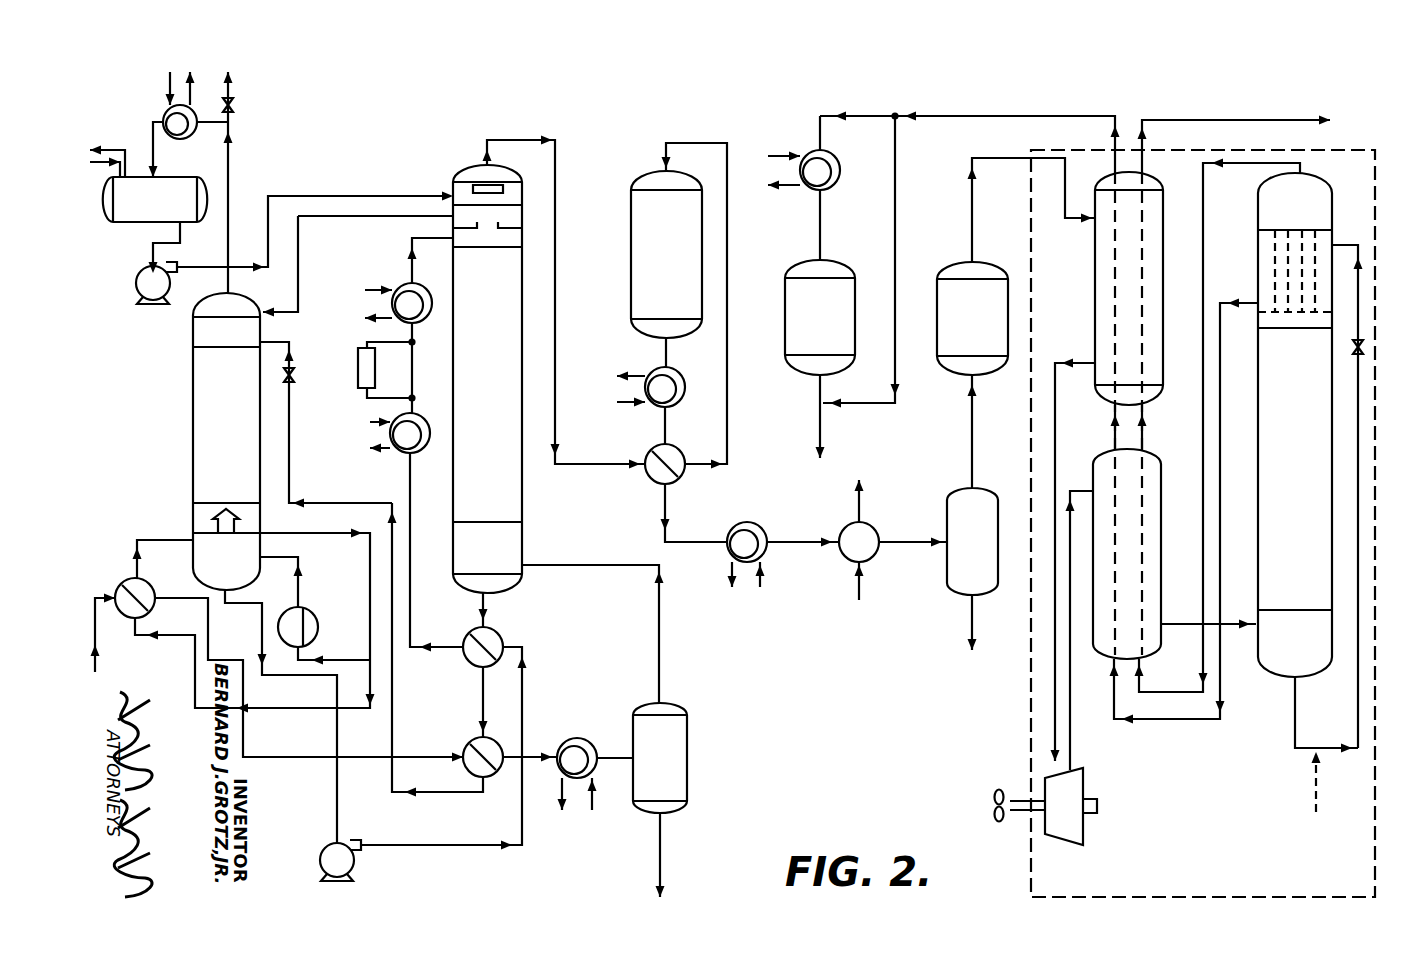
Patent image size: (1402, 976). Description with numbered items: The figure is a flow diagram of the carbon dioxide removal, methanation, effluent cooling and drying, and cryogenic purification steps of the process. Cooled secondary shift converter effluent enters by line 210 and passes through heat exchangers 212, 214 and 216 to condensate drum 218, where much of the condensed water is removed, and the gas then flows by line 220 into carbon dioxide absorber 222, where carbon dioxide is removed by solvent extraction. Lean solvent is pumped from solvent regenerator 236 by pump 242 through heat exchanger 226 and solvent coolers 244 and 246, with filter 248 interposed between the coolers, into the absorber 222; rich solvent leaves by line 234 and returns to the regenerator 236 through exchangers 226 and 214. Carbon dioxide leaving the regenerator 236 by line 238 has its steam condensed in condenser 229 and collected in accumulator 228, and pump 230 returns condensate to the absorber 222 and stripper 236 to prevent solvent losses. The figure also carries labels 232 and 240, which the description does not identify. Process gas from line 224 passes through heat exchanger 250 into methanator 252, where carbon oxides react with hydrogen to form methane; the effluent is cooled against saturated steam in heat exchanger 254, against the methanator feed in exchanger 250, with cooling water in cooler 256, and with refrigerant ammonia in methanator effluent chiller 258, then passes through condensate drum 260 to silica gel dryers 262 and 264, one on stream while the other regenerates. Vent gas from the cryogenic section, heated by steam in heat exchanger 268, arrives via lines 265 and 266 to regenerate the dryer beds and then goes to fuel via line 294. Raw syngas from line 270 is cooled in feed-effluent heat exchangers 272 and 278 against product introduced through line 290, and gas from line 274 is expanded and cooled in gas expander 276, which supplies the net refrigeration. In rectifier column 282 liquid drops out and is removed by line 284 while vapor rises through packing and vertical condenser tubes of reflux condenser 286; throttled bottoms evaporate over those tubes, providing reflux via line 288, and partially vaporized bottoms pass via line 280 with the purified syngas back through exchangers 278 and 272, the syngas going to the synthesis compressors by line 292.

The line 210 is at (97, 640).
The heat exchanger 212 is at (127, 578).
The heat exchanger 214 is at (475, 737).
The heat exchanger 216 is at (577, 735).
The condensate drum 218 is at (678, 750).
The line 220 is at (611, 565).
The carbon dioxide absorber 222 is at (410, 396).
The line 224 is at (530, 138).
The heat exchanger 226 is at (500, 635).
The accumulator 228 is at (145, 215).
The condenser 229 is at (163, 118).
The pump 230 is at (143, 290).
The line 232 is at (525, 680).
The line 234 is at (289, 437).
The solvent regenerator 236 is at (245, 403).
The line 238 is at (229, 224).
The heat exchanger 240 is at (335, 600).
The pump 242 is at (355, 862).
The solvent cooler 244 is at (405, 452).
The solvent cooler 246 is at (407, 282).
The filter 248 is at (360, 356).
The heat exchanger 250 is at (696, 440).
The methanator 252 is at (666, 269).
The heat exchanger 254 is at (680, 376).
The cooler 256 is at (757, 524).
The methanator effluent chiller 258 is at (870, 524).
The condensate drum 260 is at (958, 578).
The silica gel dryer 262 is at (972, 318).
The silica gel dryer 264 is at (820, 317).
The line 265 is at (1030, 113).
The line 266 is at (884, 96).
The heat exchanger 268 is at (837, 194).
The line 270 is at (1008, 150).
The feed-effluent heat exchanger 272 is at (1103, 245).
The line 274 is at (1057, 450).
The gas expander 276 is at (1068, 836).
The feed-effluent heat exchanger 278 is at (1106, 644).
The line 280 is at (1205, 722).
The rectifier column 282 is at (1271, 531).
The line 284 is at (1294, 738).
The reflux condenser 286 is at (1280, 248).
The line 288 is at (1358, 434).
The line 290 is at (1235, 226).
The line 292 is at (1274, 102).
The line 294 is at (820, 420).